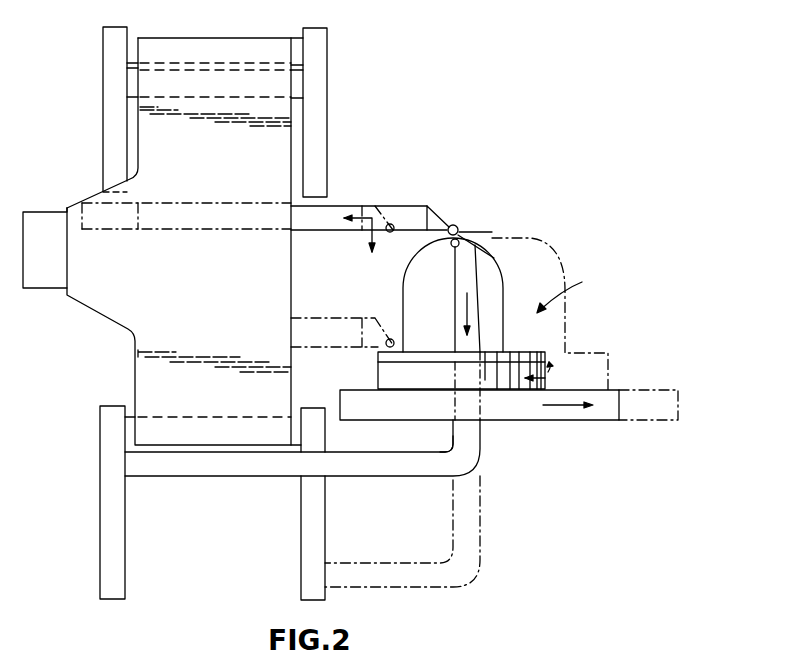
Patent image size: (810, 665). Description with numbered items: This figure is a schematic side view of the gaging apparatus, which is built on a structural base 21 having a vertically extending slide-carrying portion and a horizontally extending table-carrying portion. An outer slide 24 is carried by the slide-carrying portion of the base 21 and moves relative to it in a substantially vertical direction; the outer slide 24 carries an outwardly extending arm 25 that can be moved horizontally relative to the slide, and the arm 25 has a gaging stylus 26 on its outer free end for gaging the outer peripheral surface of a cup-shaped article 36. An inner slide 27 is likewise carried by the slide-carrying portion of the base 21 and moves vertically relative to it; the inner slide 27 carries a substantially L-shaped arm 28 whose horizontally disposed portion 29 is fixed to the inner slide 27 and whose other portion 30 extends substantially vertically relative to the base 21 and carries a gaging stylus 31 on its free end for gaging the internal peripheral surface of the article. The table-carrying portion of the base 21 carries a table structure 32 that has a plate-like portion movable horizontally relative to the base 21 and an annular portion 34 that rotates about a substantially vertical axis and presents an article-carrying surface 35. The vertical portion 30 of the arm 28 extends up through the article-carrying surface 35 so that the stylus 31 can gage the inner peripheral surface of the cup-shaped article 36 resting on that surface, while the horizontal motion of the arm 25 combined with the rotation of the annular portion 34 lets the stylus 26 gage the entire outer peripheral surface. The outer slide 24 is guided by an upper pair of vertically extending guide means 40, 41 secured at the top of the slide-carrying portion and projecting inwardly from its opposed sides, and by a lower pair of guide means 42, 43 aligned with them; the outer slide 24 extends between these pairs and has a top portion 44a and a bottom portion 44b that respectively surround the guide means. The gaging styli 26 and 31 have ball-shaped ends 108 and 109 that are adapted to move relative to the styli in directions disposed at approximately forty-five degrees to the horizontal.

The structural base 21 is at (275, 153).
The outer slide 24 is at (270, 288).
The outwardly extending arm 25 is at (340, 206).
The gaging stylus 26 is at (449, 221).
The inner slide 27 is at (247, 470).
The L-shaped arm 28 is at (480, 443).
The horizontally disposed portion 29 is at (360, 462).
The vertically extending portion 30 is at (458, 308).
The gaging stylus 31 is at (493, 259).
The table structure 32 is at (570, 293).
The annular portion 34 is at (545, 379).
The article-carrying surface 35 is at (518, 352).
The cup-shaped article 36 is at (500, 236).
The upper guide means 40 is at (107, 110).
The upper guide means 41 is at (318, 94).
The lower guide means 42 is at (108, 518).
The lower guide means 43 is at (318, 526).
The top portion 44a is at (228, 40).
The bottom portion 44b is at (142, 432).
The ball-shaped end 108 is at (459, 230).
The ball-shaped end 109 is at (450, 248).